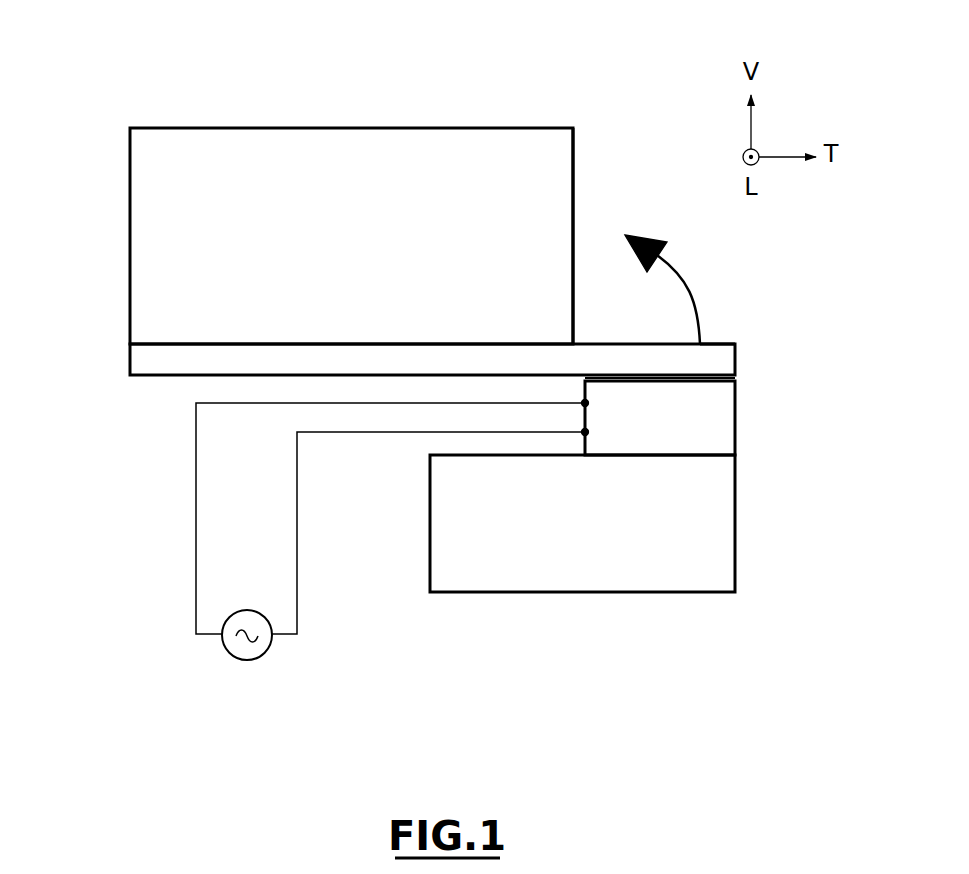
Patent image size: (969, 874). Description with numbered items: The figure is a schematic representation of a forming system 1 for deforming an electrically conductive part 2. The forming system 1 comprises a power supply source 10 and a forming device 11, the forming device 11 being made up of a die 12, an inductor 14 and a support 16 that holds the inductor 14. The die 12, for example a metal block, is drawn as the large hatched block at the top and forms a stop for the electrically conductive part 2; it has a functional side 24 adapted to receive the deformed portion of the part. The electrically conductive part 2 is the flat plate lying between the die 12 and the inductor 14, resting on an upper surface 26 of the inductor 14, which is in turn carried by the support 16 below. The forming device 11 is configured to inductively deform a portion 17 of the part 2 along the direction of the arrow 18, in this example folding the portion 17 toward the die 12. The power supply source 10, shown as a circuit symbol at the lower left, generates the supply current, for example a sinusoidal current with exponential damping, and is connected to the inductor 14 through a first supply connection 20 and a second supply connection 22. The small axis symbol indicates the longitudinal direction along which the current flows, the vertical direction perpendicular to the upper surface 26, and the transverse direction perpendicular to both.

The forming system 1 is at (140, 484).
The electrically conductive part 2 is at (720, 357).
The power supply source 10 is at (233, 668).
The forming device 11 is at (613, 105).
The die 12 is at (520, 168).
The inductor 14 is at (682, 422).
The support 16 is at (643, 567).
The portion 17 is at (723, 337).
The arrow 18 is at (693, 300).
The first supply connection 20 is at (380, 432).
The second supply connection 22 is at (353, 405).
The functional side 24 is at (574, 196).
The upper surface 26 is at (732, 377).